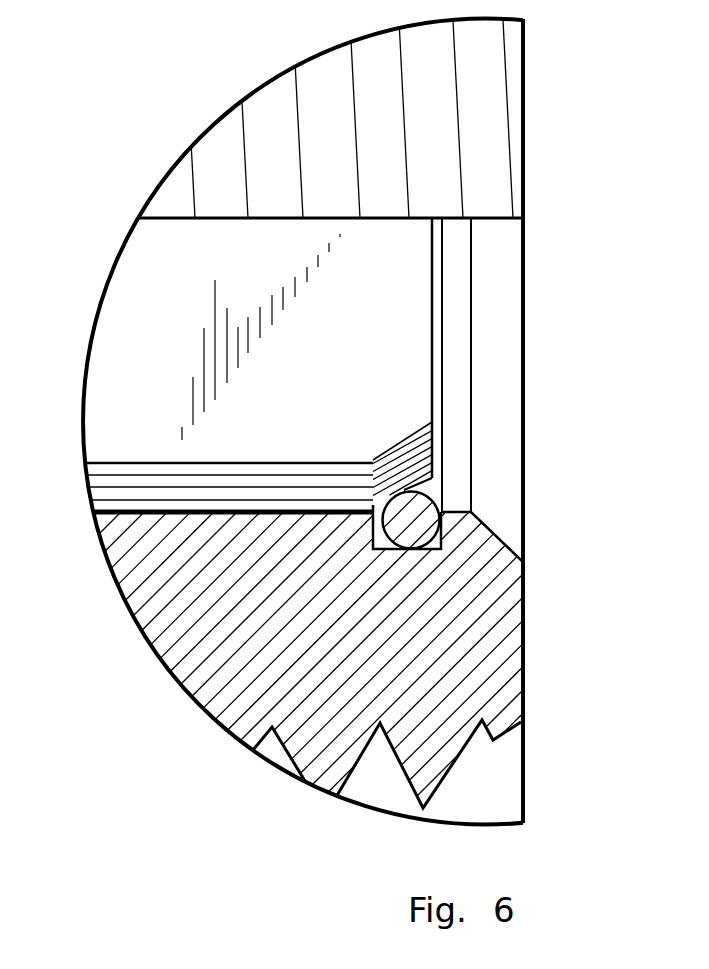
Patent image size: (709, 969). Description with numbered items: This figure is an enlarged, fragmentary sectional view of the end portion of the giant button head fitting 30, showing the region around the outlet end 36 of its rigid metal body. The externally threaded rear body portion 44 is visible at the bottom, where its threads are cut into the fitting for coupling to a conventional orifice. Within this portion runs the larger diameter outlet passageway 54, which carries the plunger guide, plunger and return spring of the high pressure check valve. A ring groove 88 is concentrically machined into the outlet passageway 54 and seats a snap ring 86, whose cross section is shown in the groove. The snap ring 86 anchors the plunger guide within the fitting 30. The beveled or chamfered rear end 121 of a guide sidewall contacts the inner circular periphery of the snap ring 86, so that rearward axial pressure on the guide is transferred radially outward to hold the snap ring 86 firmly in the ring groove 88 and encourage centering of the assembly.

The giant button head fitting 30 is at (566, 598).
The outlet end 36 is at (602, 232).
The rear body portion 44 is at (448, 760).
The outlet passageway 54 is at (229, 473).
The snap ring 86 is at (427, 500).
The ring groove 88 is at (424, 563).
The rear end of guide sidewall 121 is at (415, 355).